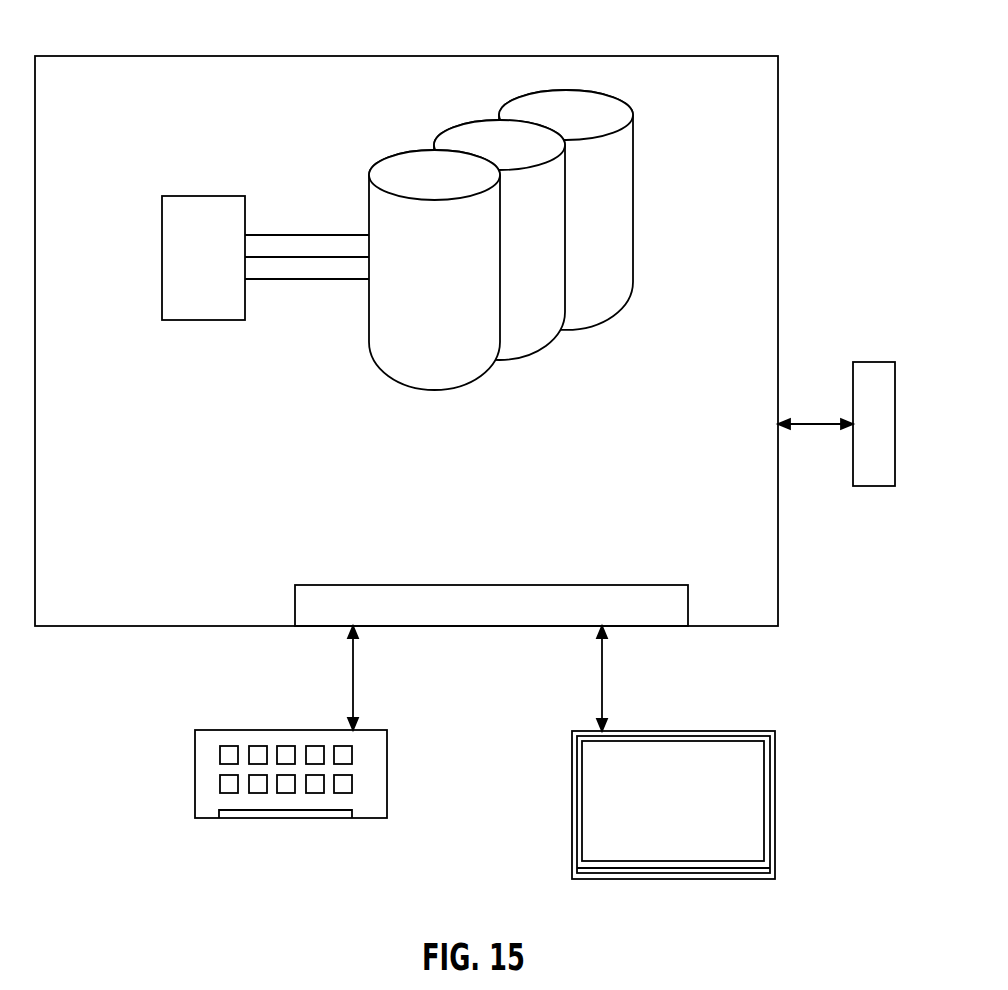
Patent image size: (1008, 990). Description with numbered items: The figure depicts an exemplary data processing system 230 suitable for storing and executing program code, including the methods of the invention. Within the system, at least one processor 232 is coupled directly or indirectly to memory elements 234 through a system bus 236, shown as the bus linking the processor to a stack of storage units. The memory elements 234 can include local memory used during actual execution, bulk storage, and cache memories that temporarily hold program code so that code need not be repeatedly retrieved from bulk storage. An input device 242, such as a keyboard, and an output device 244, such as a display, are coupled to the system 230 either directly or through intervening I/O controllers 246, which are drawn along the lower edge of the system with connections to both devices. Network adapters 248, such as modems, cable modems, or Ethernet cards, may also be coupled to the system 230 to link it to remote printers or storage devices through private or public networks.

The data processing system 230 is at (85, 56).
The processor 232 is at (191, 196).
The memory elements 234 is at (457, 125).
The system bus 236 is at (283, 235).
The input device 242 is at (225, 730).
The output device 244 is at (674, 731).
The I/O controllers 246 is at (475, 585).
The network adapters 248 is at (867, 362).